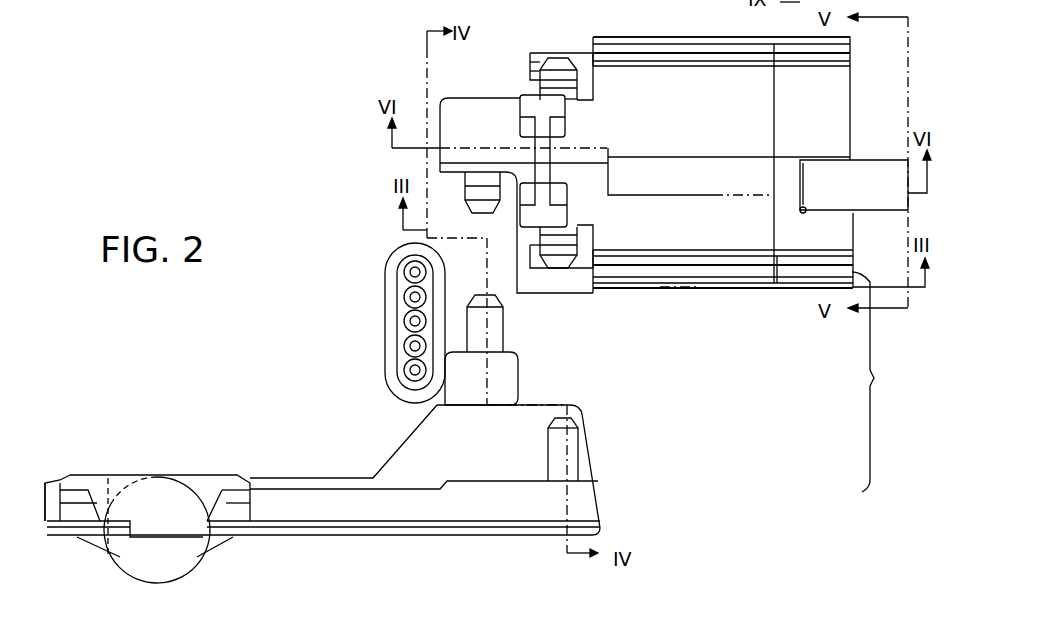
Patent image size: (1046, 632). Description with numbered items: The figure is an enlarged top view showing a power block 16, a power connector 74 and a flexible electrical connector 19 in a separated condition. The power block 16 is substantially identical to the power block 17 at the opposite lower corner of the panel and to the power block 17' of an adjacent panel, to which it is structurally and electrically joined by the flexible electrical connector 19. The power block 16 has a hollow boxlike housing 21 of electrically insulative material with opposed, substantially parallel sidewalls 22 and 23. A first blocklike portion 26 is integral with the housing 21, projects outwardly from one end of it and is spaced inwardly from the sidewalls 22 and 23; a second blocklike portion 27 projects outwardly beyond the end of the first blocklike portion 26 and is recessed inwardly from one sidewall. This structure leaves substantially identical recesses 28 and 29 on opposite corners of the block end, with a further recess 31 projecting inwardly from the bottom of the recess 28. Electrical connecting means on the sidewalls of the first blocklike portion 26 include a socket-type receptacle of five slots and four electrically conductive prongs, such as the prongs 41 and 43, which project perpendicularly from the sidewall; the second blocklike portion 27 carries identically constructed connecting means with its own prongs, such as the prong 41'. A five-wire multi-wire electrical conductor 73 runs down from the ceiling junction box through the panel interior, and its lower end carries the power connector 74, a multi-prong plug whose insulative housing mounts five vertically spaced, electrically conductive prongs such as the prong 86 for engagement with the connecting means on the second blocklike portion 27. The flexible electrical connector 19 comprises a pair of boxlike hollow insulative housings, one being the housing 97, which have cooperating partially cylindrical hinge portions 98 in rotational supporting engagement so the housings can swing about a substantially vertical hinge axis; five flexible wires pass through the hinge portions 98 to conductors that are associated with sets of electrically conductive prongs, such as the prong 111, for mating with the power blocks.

The power block 16 is at (750, 300).
The power block 17 is at (688, 4).
The power block 17' is at (183, 9).
The flexible electrical connector 19 is at (322, 545).
The housing 21 is at (828, 100).
The sidewall 22 is at (727, 292).
The sidewall 23 is at (674, 32).
The first blocklike portion 26 is at (585, 183).
The second blocklike portion 27 is at (462, 120).
The recess 28 is at (593, 277).
The recess 29 is at (588, 63).
The recess 31 is at (513, 208).
The prong 41 is at (598, 163).
The prong 41' is at (465, 198).
The prong 43 is at (536, 5).
The multi-wire electrical conductor 73 is at (405, 312).
The power connector 74 is at (518, 382).
The prong 86 is at (493, 320).
The housing 97 is at (50, 505).
The hinge portions 98 is at (167, 553).
The prong 111 is at (570, 442).